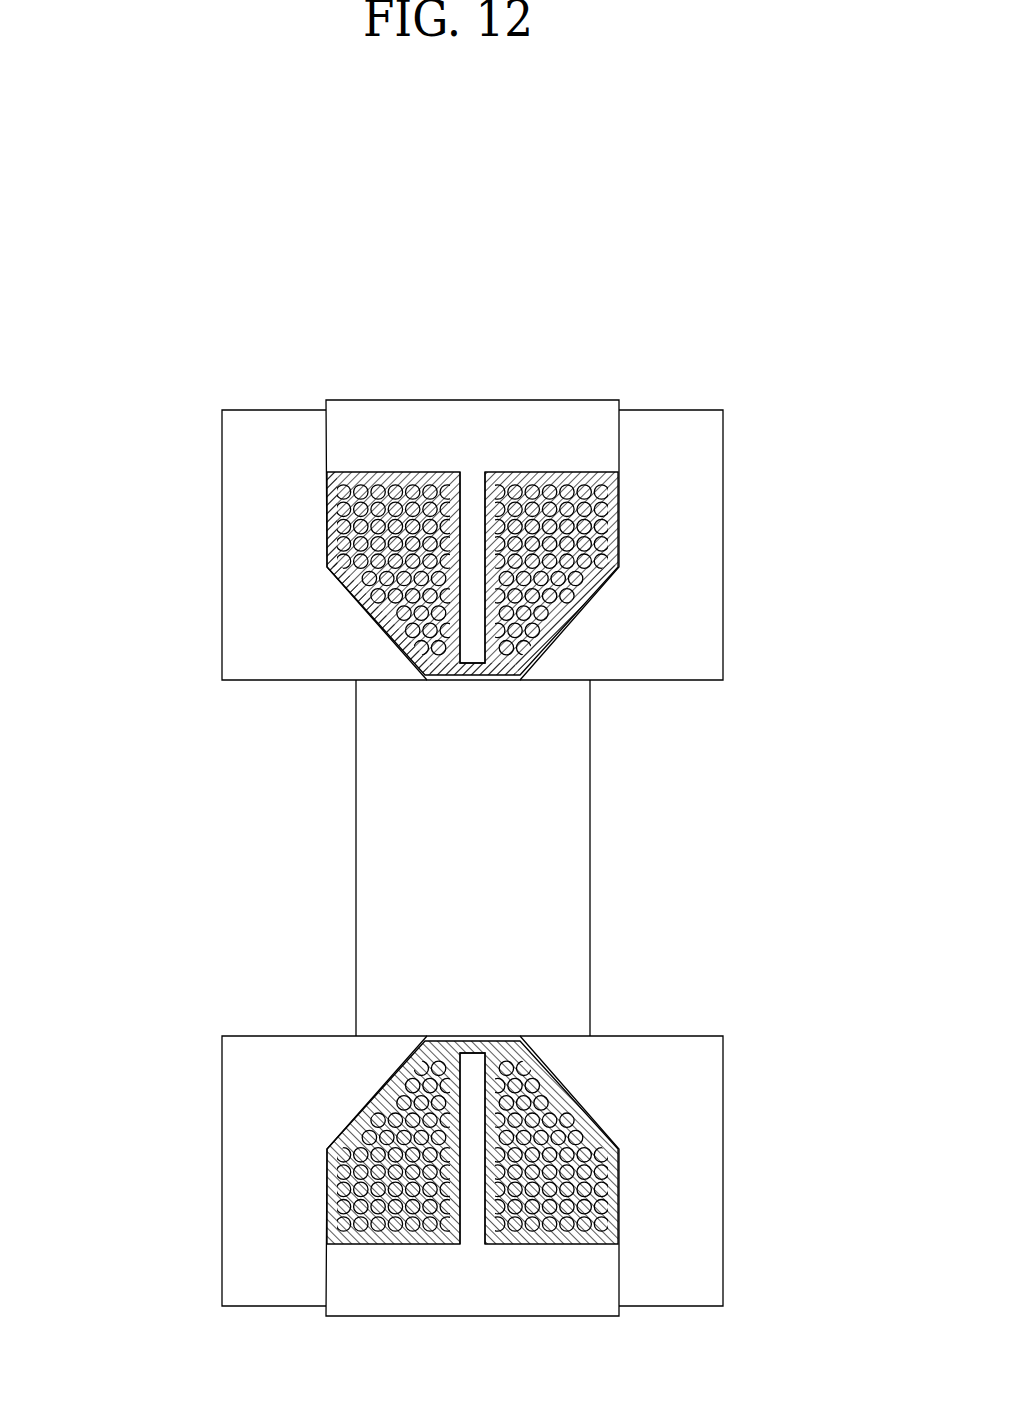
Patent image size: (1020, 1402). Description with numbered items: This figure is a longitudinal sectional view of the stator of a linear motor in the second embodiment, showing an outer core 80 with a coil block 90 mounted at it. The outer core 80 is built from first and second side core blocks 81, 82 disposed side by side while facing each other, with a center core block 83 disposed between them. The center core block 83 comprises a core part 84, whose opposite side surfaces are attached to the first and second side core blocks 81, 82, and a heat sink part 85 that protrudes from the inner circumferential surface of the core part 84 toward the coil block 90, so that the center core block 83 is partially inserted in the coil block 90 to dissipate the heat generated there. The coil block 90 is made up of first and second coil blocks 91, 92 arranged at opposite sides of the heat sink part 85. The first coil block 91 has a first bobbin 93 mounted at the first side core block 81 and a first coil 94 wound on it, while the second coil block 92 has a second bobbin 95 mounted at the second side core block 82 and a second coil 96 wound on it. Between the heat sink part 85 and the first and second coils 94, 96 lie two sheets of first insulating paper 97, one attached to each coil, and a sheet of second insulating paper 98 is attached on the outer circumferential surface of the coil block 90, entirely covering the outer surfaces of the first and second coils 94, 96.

The outer core 80 is at (472, 422).
The first side core block 81 is at (281, 418).
The second side core block 82 is at (651, 422).
The center core block 83 is at (472, 461).
The core part 84 is at (453, 432).
The heat sink part 85 is at (472, 490).
The coil block 90 is at (445, 663).
The first coil block 91 is at (268, 601).
The second coil block 92 is at (406, 708).
The first bobbin 93 is at (330, 565).
The first coil 94 is at (373, 597).
The second bobbin 95 is at (553, 648).
The second coil 96 is at (568, 640).
The first insulating paper 97 is at (460, 566).
The second insulating paper 98 is at (327, 477).